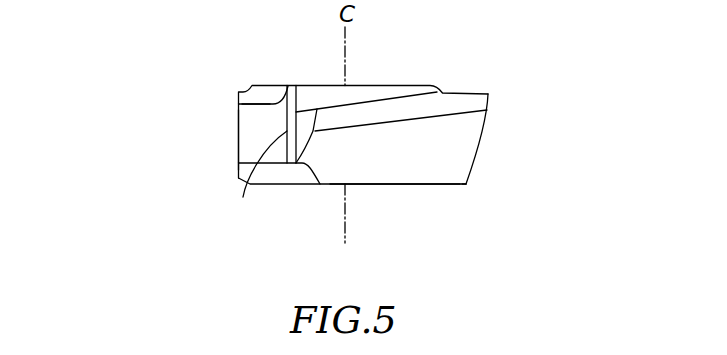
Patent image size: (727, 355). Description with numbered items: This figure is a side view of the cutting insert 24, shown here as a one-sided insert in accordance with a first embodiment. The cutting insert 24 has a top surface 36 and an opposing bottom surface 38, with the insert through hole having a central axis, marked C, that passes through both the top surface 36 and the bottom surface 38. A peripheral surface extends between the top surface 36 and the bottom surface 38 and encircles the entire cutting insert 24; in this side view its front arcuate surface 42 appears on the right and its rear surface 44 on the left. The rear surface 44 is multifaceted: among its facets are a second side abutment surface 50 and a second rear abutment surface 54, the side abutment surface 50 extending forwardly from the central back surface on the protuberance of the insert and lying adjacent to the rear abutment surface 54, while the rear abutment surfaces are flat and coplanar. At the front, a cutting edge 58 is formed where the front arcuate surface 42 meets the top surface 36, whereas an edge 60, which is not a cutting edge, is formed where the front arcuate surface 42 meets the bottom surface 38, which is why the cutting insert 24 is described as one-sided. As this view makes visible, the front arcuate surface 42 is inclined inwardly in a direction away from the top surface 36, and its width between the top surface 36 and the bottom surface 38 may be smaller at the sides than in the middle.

The cutting insert 24 is at (315, 139).
The top surface 36 is at (365, 86).
The bottom surface 38 is at (392, 185).
The front arcuate surface 42 is at (480, 138).
The rear surface 44 is at (238, 147).
The second side abutment surface 50 is at (248, 125).
The second rear abutment surface 54 is at (243, 197).
The cutting edge 58 is at (488, 94).
The edge 60 is at (466, 184).